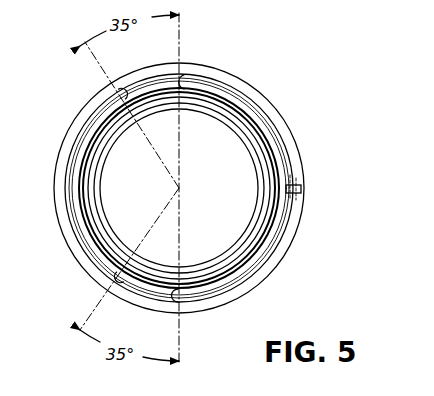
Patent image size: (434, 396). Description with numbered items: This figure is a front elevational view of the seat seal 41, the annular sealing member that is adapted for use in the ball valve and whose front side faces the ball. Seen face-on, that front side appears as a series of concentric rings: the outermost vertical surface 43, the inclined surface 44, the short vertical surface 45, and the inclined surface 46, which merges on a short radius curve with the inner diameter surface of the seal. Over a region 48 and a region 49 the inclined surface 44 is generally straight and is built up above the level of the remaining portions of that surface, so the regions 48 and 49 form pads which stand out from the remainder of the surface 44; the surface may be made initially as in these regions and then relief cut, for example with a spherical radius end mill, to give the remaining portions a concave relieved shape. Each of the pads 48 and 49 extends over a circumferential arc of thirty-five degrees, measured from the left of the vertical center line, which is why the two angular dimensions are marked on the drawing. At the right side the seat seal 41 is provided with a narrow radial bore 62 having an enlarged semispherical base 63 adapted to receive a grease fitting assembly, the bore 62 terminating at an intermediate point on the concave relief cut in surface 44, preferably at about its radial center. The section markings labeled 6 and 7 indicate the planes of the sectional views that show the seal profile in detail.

The seat seal 41 is at (237, 124).
The vertical surface 43 is at (213, 304).
The inclined surface 44 is at (257, 265).
The short vertical surface 45 is at (215, 280).
The inclined surface 46 is at (248, 248).
The region 48 is at (123, 274).
The region 49 is at (150, 80).
The narrow radial bore 62 is at (292, 181).
The enlarged semispherical base 63 is at (299, 198).
The section line 6- 6 is at (177, 253).
The section line 7- 7 is at (240, 162).